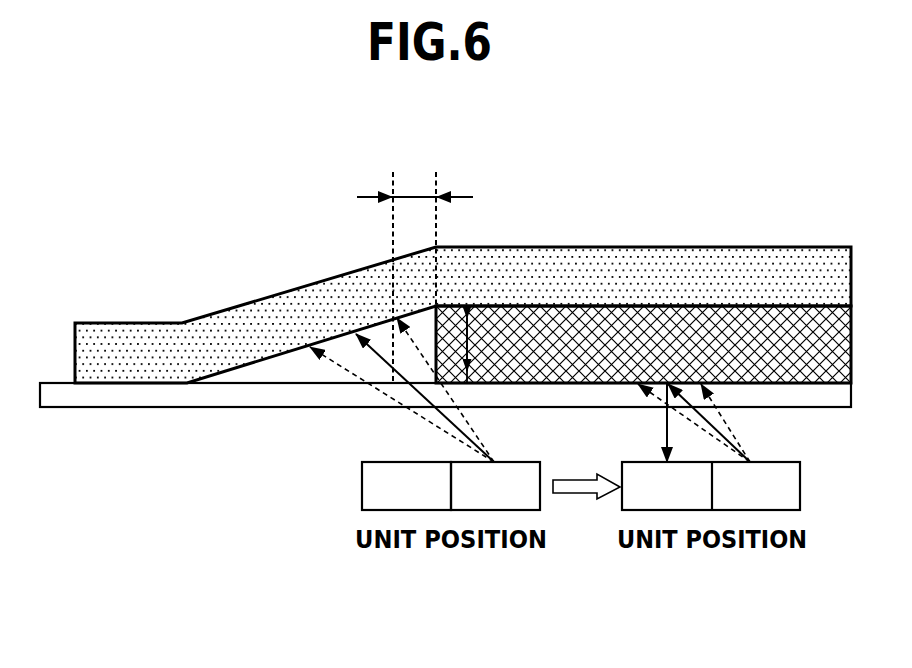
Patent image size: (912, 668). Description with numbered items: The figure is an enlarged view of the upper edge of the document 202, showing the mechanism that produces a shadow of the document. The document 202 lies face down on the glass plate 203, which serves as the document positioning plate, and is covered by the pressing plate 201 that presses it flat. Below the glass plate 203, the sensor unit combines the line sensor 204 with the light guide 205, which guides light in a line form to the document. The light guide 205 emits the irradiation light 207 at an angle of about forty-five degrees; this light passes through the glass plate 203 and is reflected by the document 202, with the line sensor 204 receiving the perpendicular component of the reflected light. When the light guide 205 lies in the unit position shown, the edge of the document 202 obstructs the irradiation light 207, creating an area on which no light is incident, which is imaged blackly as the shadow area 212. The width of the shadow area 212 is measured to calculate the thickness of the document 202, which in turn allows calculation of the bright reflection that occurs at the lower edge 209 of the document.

The pressing plate 201 is at (678, 255).
The document 202 is at (557, 385).
The glass plate 203 is at (128, 398).
The line sensor 204 is at (406, 486).
The light guide 205 is at (495, 486).
The irradiation light 207 is at (443, 430).
The lower edge 209 is at (468, 346).
The shadow area 212 is at (413, 195).